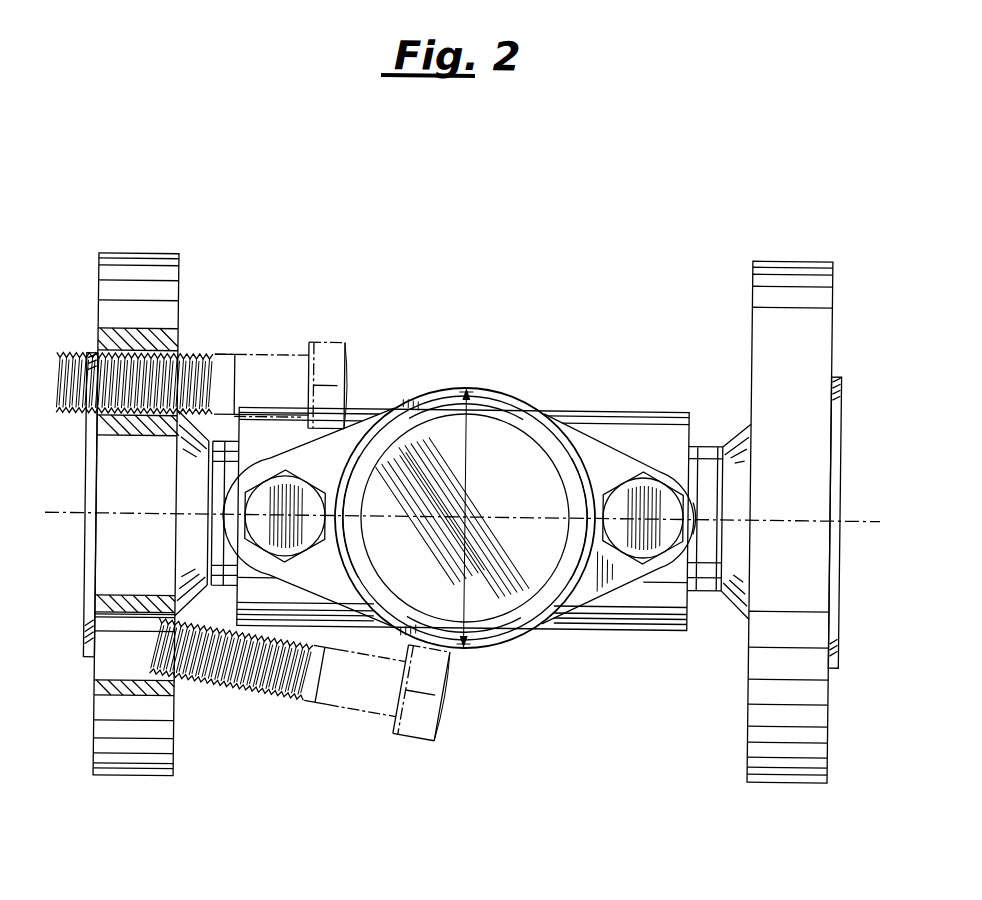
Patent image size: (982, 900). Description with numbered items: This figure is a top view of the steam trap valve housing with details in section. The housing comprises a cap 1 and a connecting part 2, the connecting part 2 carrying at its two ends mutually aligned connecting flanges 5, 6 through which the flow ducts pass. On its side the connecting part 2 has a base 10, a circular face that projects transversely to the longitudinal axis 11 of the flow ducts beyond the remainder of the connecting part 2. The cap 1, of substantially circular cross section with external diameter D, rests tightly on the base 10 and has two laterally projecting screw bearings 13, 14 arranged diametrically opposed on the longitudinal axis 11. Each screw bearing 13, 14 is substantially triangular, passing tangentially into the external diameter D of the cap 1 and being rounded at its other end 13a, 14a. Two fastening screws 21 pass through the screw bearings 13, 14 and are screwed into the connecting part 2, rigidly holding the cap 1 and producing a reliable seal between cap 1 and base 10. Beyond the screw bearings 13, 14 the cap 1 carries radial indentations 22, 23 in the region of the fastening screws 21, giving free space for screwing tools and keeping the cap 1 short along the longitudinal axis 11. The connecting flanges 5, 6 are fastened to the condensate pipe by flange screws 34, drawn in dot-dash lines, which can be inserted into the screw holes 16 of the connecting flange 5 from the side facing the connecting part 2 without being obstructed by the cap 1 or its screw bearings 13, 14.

The cap 1 is at (481, 383).
The connecting part 2 is at (599, 635).
The connecting flange 5 is at (128, 762).
The connecting flange 6 is at (780, 755).
The base 10 is at (401, 399).
The longitudinal axis 11 is at (861, 528).
The screw bearing 13 is at (340, 447).
The rounded end 13a is at (237, 524).
The screw bearing 14 is at (589, 446).
The rounded end 14a is at (693, 527).
The screw holes 16 is at (127, 437).
The fastening screws 21 is at (262, 503).
The radial indentation 22 is at (343, 533).
The radial indentation 23 is at (590, 500).
The flange screws 34 is at (265, 367).
The external diameter D is at (465, 476).